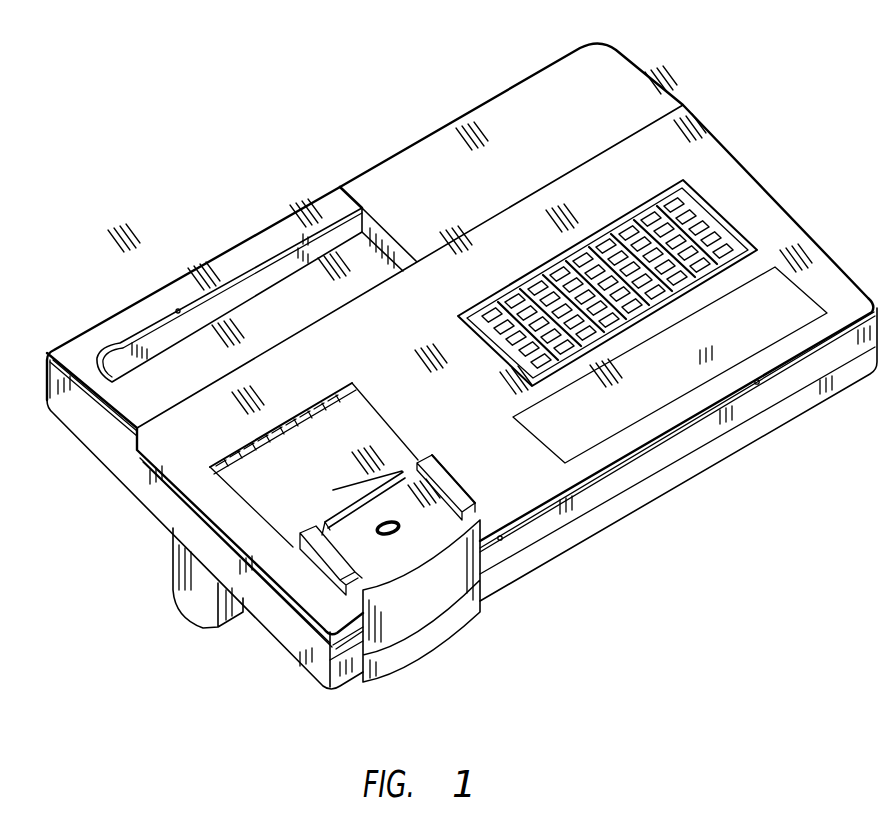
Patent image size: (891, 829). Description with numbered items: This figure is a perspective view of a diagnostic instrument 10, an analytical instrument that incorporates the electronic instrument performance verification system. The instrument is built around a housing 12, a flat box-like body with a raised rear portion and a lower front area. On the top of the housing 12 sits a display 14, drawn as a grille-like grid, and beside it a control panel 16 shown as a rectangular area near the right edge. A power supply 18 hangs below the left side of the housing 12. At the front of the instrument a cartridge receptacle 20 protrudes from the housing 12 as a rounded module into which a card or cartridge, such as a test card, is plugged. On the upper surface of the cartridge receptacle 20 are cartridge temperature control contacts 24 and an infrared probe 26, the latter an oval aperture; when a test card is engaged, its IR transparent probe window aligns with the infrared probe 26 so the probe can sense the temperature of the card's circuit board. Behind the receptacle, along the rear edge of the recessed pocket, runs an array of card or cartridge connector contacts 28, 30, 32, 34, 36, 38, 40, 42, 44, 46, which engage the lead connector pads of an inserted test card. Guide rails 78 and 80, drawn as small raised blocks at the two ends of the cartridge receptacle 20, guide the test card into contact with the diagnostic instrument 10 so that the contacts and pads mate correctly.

The diagnostic instrument 10 is at (790, 141).
The housing 12 is at (568, 540).
The display 14 is at (590, 240).
The control panel 16 is at (790, 292).
The power supply 18 is at (238, 616).
The cartridge receptacle 20 is at (420, 566).
The cartridge temperature control contacts 24 is at (324, 521).
The infrared probe 26 is at (398, 533).
The cartridge connector contact 28 is at (220, 468).
The cartridge connector contact 30 is at (226, 458).
The cartridge connector contact 32 is at (248, 447).
The cartridge connector contact 34 is at (260, 438).
The cartridge connector contact 36 is at (278, 432).
The cartridge connector contact 38 is at (285, 422).
The cartridge connector contact 40 is at (308, 417).
The cartridge connector contact 42 is at (316, 405).
The cartridge connector contact 44 is at (336, 403).
The cartridge connector contact 46 is at (344, 389).
The guide rail 78 is at (330, 560).
The guide rail 80 is at (442, 485).